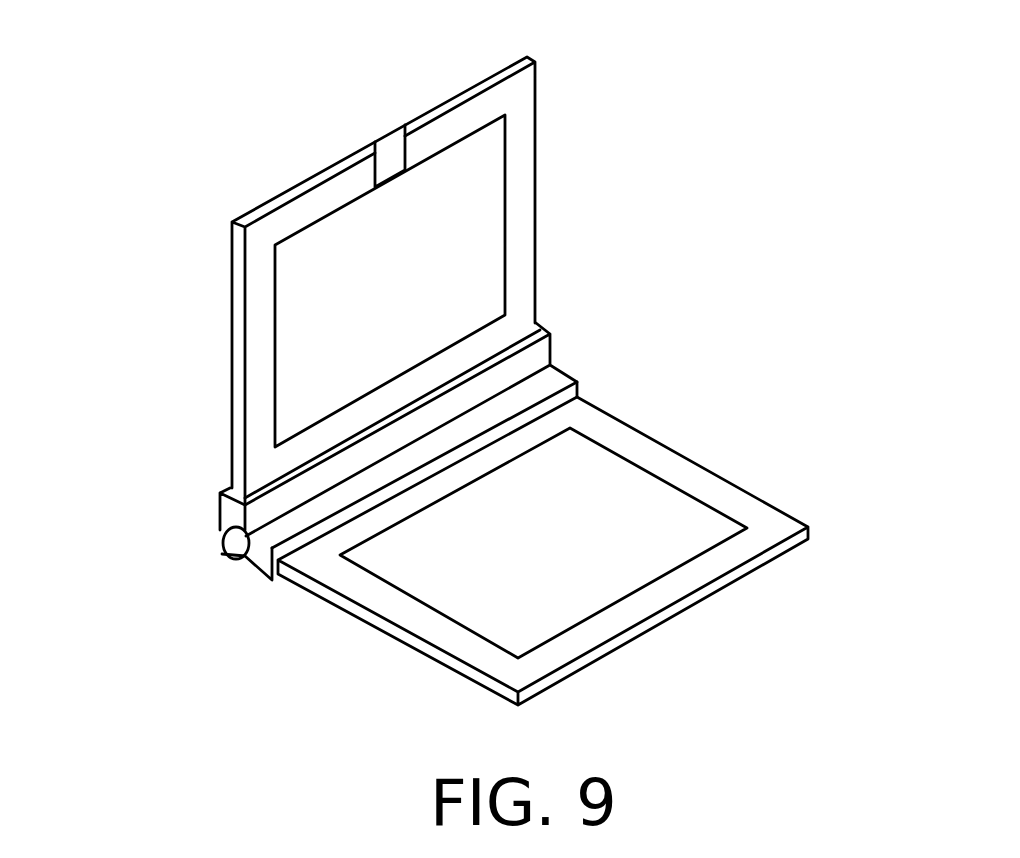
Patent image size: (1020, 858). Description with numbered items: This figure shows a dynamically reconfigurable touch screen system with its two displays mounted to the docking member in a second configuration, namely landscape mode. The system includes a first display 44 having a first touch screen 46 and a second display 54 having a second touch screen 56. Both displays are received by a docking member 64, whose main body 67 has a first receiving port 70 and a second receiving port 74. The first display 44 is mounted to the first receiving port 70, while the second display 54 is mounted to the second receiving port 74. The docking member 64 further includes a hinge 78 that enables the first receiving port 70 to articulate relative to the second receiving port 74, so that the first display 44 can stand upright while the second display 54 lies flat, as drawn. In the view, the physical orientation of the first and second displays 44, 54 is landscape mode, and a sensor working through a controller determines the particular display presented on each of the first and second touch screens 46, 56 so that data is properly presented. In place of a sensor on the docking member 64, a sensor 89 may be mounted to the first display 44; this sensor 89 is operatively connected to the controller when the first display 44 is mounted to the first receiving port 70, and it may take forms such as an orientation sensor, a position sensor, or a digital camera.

The first display 44 is at (540, 110).
The first touch screen 46 is at (488, 243).
The sensor 89 is at (389, 157).
The main body 67 is at (570, 362).
The first receiving port 70 is at (274, 482).
The hinge 78 is at (232, 545).
The second receiving port 74 is at (306, 542).
The docking member 64 is at (377, 469).
The second display 54 is at (752, 481).
The second touch screen 56 is at (630, 481).